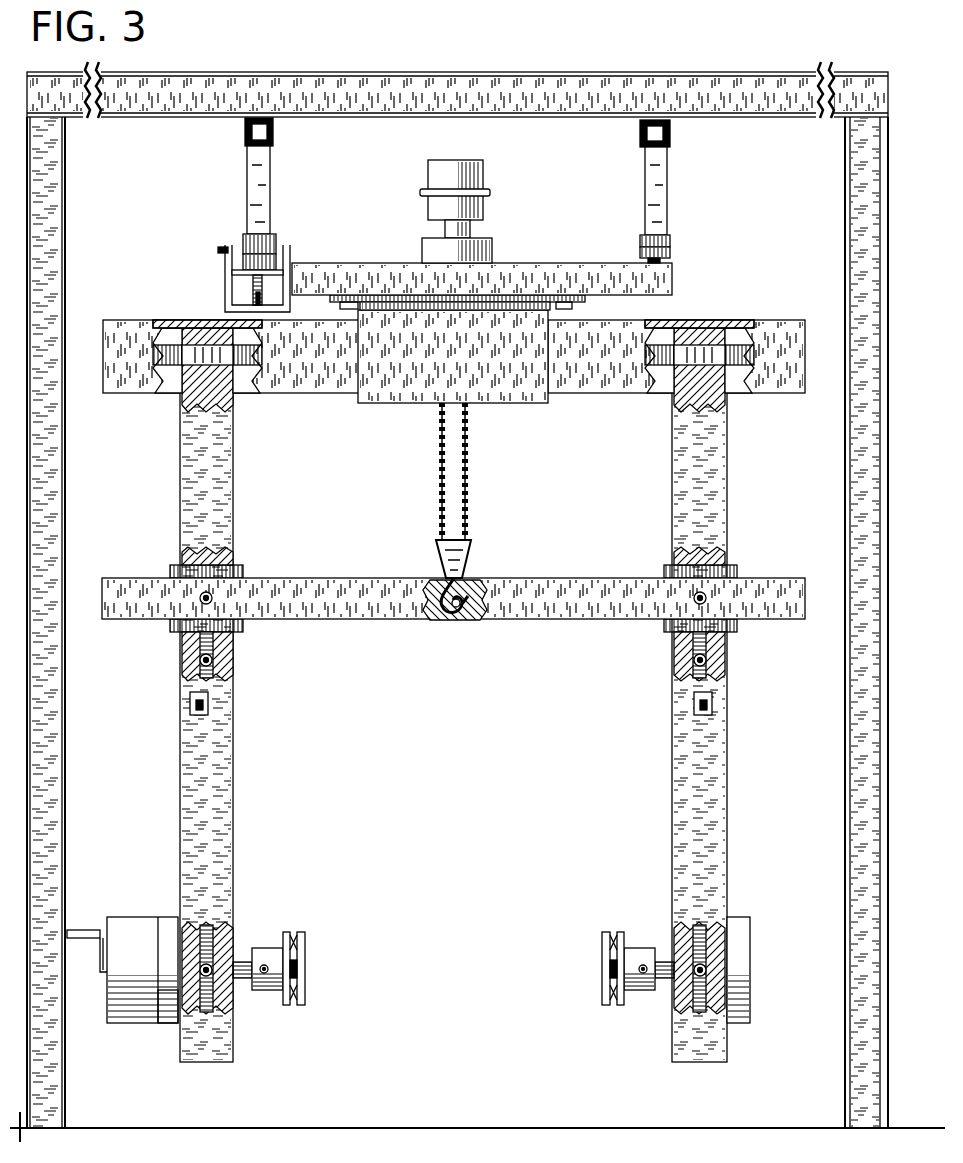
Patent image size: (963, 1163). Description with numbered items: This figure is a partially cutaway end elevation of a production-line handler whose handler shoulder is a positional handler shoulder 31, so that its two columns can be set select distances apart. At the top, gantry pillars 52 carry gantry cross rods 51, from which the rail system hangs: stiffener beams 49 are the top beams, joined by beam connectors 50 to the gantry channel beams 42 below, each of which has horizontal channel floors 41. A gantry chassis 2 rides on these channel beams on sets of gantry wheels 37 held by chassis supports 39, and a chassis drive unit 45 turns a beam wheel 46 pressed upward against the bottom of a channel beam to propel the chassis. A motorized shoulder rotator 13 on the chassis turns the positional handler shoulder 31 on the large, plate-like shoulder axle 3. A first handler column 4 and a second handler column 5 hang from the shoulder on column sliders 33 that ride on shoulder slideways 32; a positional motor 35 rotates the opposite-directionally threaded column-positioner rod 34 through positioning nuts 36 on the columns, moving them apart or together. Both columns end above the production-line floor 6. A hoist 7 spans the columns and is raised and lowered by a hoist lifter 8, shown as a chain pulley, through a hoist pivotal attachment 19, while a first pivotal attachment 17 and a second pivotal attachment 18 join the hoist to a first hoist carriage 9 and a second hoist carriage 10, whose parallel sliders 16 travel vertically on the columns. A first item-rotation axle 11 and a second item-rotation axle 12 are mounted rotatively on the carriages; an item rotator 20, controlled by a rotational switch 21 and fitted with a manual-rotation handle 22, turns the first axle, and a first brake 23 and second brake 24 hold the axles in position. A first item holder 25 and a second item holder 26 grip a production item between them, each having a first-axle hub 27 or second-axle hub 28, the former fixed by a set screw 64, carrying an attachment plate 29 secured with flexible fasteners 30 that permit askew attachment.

The gantry chassis 2 is at (542, 270).
The shoulder axle 3 is at (510, 312).
The first handler column 4 is at (192, 782).
The second handler column 5 is at (718, 782).
The production-line floor 6 is at (468, 1128).
The hoist 7 is at (360, 578).
The hoist lifter 8 is at (466, 540).
The first hoist carriage 9 is at (196, 682).
The second hoist carriage 10 is at (712, 682).
The first item-rotation axle 11 is at (245, 980).
The second item-rotation axle 12 is at (662, 980).
The motorized shoulder rotator 13 is at (478, 212).
The parallel sliders 16 is at (196, 660).
The first pivotal attachment 17 is at (205, 594).
The second pivotal attachment 18 is at (703, 594).
The hoist pivotal attachment 19 is at (457, 620).
The item rotator 20 is at (135, 950).
The rotational switch 21 is at (192, 703).
The manual-rotation handle 22 is at (74, 930).
The first brake 23 is at (168, 1000).
The second brake 24 is at (738, 1000).
The first item holder 25 is at (303, 932).
The second item holder 26 is at (604, 932).
The first-axle hub 27 is at (263, 948).
The second-axle hub 28 is at (644, 948).
The attachment plate 29 is at (290, 950).
The flexible fasteners 30 is at (303, 1003).
The positional handler shoulder 31 is at (320, 393).
The shoulder slideways 32 is at (160, 385).
The column sliders 33 is at (212, 322).
The column-positioner rod 34 is at (265, 393).
The positional motor 35 is at (400, 370).
The positioning nuts 36 is at (185, 395).
The gantry wheels 37 is at (256, 246).
The chassis supports 39 is at (245, 256).
The channel floors 41 is at (266, 285).
The gantry channel beams 42 is at (218, 250).
The chassis drive unit 45 is at (260, 305).
The beam wheel 46 is at (286, 255).
The stiffener beams 49 is at (245, 135).
The beam connectors 50 is at (262, 192).
The gantry cross rods 51 is at (480, 72).
The gantry pillars 52 is at (65, 500).
The set screw 64 is at (296, 968).